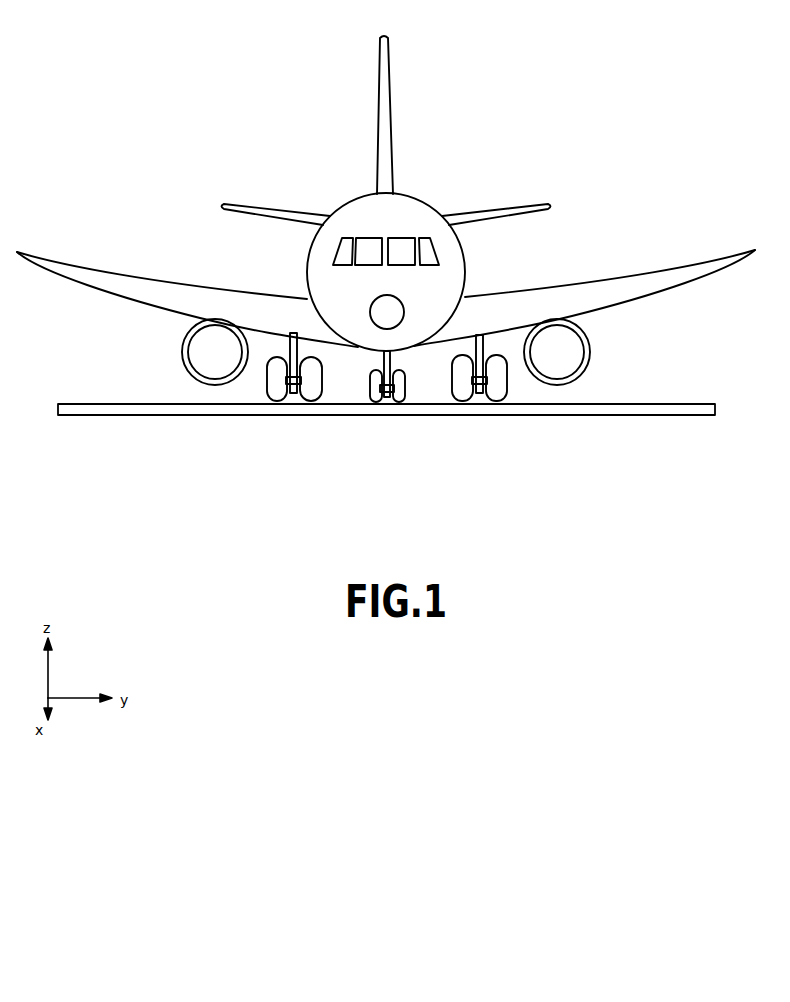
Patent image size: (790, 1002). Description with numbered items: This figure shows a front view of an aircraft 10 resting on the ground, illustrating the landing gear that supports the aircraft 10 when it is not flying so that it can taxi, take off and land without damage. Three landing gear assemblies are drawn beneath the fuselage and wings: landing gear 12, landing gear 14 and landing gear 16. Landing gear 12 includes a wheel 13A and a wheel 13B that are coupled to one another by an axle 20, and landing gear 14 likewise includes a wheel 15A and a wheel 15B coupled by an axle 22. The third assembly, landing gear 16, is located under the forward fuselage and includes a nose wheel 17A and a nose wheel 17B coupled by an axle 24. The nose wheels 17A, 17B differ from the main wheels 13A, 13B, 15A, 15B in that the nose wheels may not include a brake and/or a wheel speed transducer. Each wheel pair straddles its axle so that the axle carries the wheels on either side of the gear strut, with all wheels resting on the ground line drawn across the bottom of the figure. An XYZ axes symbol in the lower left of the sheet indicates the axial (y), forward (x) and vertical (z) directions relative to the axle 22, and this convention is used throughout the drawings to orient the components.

The aircraft 10 is at (247, 120).
The landing gear 12 is at (515, 388).
The wheel 13A is at (511, 394).
The wheel 13B is at (405, 372).
The landing gear 14 is at (258, 388).
The wheel 15A is at (268, 396).
The wheel 15B is at (321, 397).
The landing gear 16 is at (468, 343).
The nose wheel 17A is at (407, 397).
The nose wheel 17B is at (372, 398).
The axle 20 is at (480, 385).
The axle 22 is at (293, 386).
The axle 24 is at (386, 392).